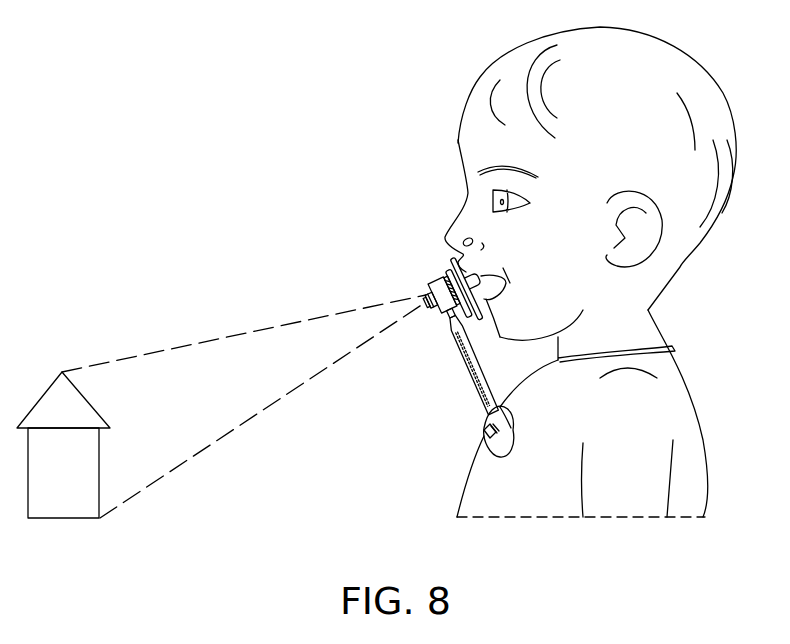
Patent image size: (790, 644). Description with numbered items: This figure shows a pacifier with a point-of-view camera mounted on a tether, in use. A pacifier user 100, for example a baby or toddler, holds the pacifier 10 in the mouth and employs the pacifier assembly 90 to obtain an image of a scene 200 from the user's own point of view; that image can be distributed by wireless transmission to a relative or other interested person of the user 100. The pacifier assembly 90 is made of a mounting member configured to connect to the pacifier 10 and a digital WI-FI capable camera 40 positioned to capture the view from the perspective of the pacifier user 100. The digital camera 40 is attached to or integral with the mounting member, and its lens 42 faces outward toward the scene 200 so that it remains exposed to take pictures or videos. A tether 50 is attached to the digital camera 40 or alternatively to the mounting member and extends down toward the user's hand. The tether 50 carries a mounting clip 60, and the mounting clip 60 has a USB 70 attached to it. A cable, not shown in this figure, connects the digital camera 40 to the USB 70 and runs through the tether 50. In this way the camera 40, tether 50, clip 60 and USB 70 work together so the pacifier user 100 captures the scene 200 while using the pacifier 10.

The pacifier 10 is at (492, 322).
The digital WI-FI capable camera 40 is at (436, 280).
The lens 42 is at (430, 303).
The tether 50 is at (456, 373).
The mounting clip 60 is at (508, 453).
The USB 70 is at (487, 437).
The pacifier assembly 90 is at (447, 307).
The pacifier user 100 is at (693, 73).
The scene 200 is at (62, 385).